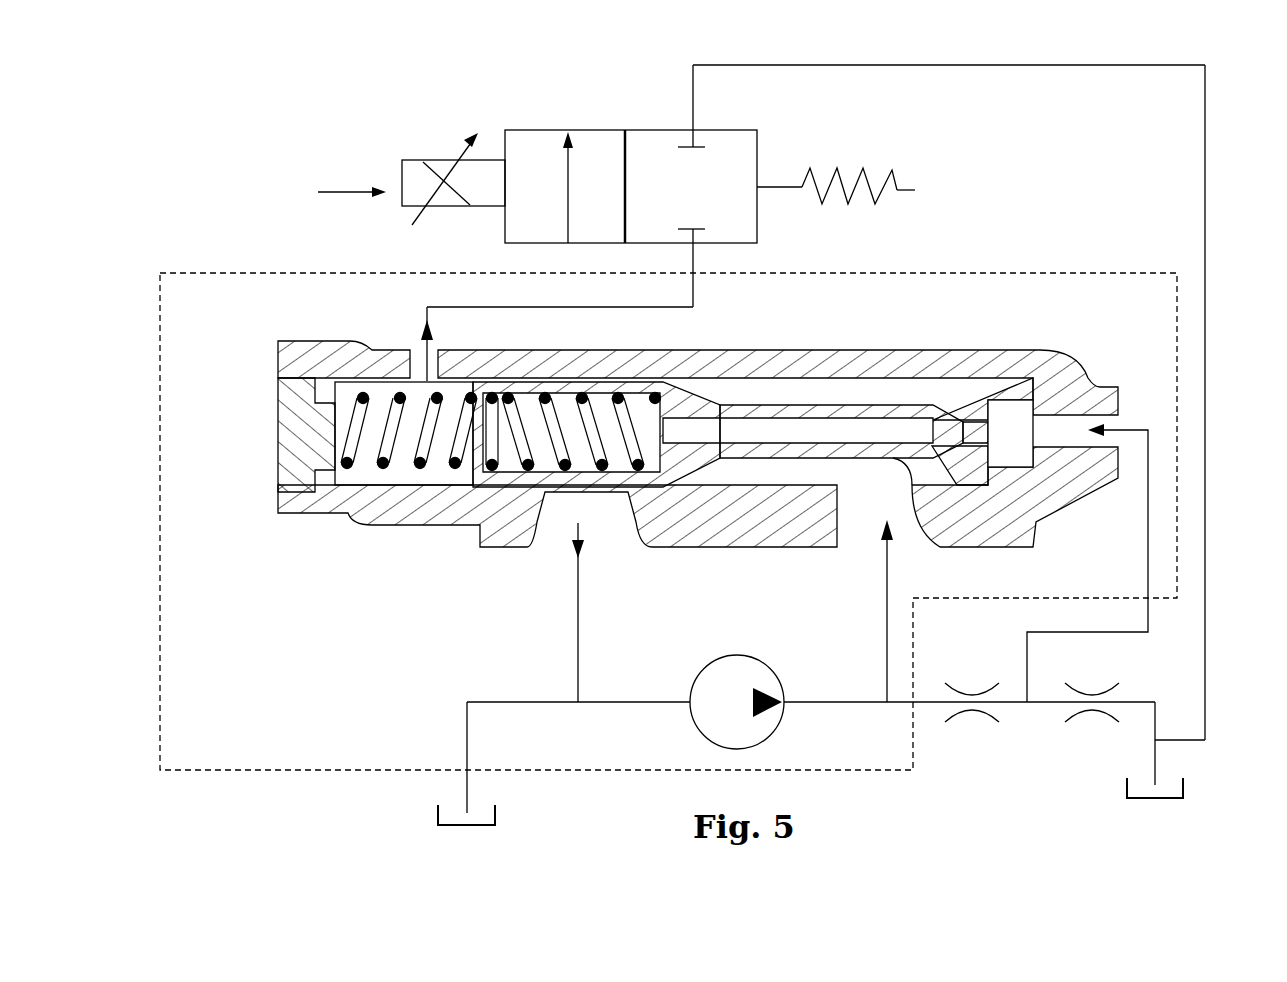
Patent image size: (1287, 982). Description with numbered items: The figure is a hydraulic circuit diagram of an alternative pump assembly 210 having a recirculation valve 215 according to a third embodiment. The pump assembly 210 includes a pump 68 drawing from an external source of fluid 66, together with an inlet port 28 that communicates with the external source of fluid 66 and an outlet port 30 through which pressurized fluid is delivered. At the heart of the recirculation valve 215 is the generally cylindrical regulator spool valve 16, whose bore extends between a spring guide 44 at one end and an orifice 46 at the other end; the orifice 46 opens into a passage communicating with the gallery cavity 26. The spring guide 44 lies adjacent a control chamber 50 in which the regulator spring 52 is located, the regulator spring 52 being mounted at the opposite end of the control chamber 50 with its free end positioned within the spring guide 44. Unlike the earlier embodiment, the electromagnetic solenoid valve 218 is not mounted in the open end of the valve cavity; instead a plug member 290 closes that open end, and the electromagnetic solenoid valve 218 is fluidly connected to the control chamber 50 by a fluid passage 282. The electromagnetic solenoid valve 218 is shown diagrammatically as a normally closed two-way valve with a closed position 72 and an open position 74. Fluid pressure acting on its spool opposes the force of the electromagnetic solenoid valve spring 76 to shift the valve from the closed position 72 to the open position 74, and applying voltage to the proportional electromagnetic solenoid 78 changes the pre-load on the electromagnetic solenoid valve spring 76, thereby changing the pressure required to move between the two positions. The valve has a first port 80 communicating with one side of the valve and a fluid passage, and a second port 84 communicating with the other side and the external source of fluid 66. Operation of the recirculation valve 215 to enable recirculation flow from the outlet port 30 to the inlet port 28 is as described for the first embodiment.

The regulator spool valve 16 is at (770, 407).
The gallery cavity 26 is at (1073, 430).
The inlet port 28 is at (596, 511).
The outlet port 30 is at (869, 525).
The spring guide 44 is at (492, 412).
The orifice 46 is at (948, 428).
The control chamber 50 is at (362, 470).
The regulator spring 52 is at (390, 452).
The external source of fluid 66 is at (497, 819).
The pump 68 is at (765, 660).
The closed position 72 is at (745, 112).
The open position 74 is at (532, 108).
The electromagnetic solenoid valve spring 76 is at (873, 185).
The proportional electromagnetic solenoid 78 is at (453, 212).
The first port 80 is at (566, 268).
The second port 84 is at (930, 402).
The pump assembly 210 is at (155, 352).
The recirculation valve 215 is at (960, 216).
The electromagnetic solenoid valve 218 is at (325, 191).
The fluid passage 282 is at (440, 343).
The plug member 290 is at (282, 494).